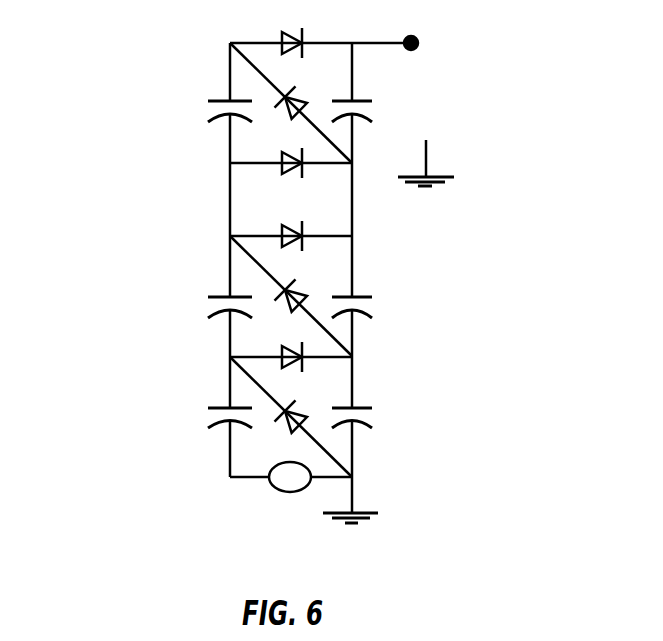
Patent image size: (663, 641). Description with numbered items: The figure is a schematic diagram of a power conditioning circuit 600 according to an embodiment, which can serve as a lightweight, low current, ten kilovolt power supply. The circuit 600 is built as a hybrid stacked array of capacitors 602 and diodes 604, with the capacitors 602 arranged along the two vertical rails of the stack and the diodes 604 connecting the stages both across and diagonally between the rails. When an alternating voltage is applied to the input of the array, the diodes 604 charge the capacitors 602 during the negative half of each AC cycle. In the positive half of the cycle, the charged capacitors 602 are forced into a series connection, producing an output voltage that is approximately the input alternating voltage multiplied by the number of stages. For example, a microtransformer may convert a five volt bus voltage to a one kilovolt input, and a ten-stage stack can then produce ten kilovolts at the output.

The circuit 600 is at (138, 55).
The capacitors 602 is at (365, 293).
The diodes 604 is at (280, 152).